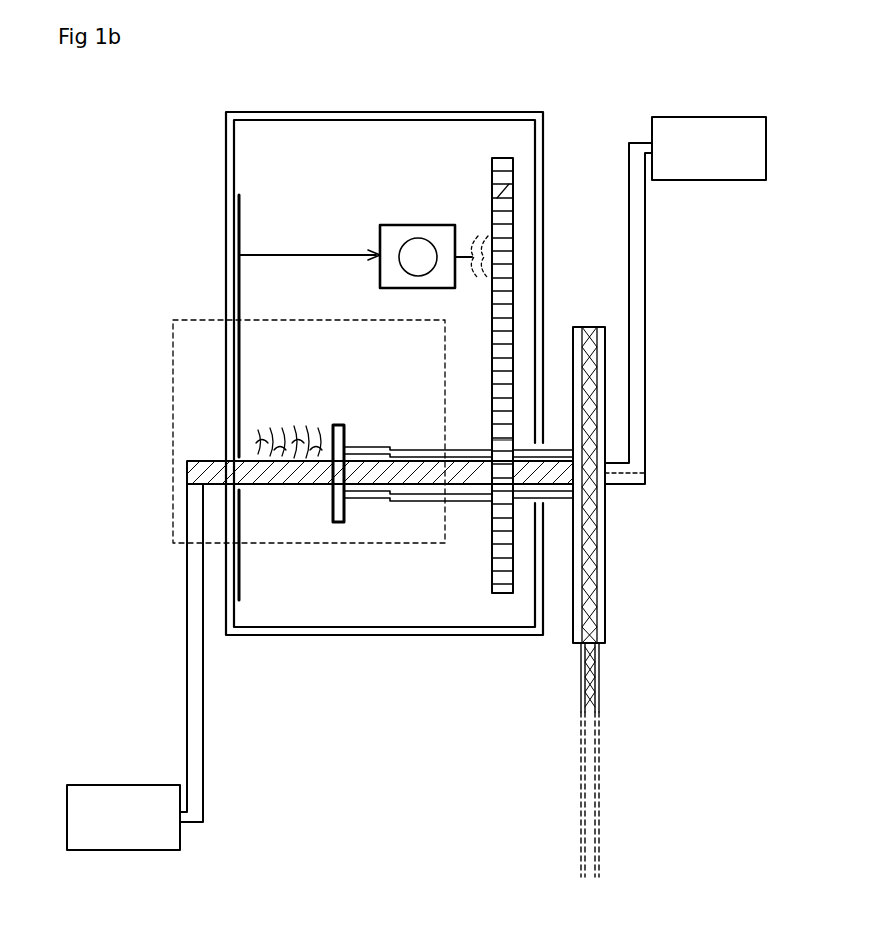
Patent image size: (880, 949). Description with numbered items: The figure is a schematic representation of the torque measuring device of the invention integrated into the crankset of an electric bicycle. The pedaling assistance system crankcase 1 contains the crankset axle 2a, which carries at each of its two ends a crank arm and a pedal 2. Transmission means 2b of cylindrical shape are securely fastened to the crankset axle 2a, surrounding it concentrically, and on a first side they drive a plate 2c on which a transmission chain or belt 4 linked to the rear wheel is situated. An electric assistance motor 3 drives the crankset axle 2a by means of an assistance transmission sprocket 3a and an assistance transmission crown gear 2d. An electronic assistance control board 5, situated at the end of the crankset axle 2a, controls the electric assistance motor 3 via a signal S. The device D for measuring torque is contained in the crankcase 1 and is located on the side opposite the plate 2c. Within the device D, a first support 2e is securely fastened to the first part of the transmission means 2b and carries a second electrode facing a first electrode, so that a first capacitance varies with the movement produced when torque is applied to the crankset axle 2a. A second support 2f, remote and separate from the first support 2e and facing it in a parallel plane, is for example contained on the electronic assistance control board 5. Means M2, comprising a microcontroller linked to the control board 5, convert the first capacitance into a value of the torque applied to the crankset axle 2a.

The crankcase 1 is at (283, 112).
The pedal 2 is at (639, 263).
The crankset axle 2a is at (272, 478).
The transmission means 2b is at (390, 455).
The plate 2c is at (605, 565).
The assistance transmission crown gear 2d is at (492, 586).
The first support 2e is at (333, 443).
The second support 2f is at (246, 522).
The electric assistance motor 3 is at (404, 225).
The assistance transmission sprocket 3a is at (513, 188).
The transmission chain or belt 4 is at (600, 696).
The electronic assistance control board 5 is at (240, 214).
The device for measuring torque D is at (192, 318).
The means for converting the first capacitance M2 is at (243, 383).
The signal S is at (309, 245).